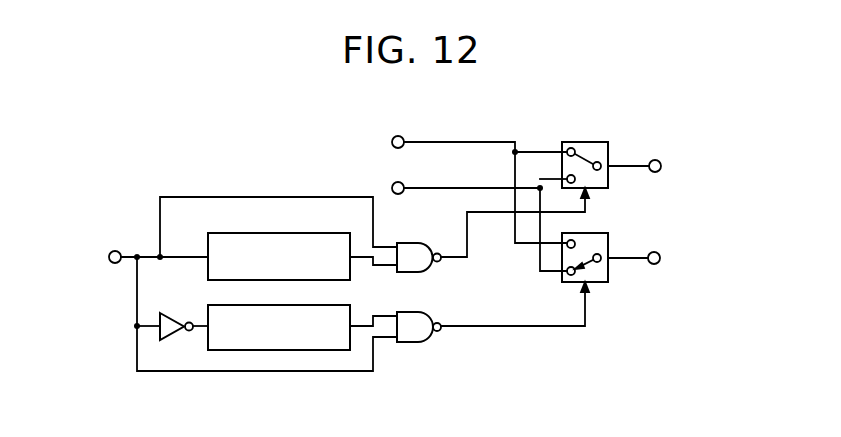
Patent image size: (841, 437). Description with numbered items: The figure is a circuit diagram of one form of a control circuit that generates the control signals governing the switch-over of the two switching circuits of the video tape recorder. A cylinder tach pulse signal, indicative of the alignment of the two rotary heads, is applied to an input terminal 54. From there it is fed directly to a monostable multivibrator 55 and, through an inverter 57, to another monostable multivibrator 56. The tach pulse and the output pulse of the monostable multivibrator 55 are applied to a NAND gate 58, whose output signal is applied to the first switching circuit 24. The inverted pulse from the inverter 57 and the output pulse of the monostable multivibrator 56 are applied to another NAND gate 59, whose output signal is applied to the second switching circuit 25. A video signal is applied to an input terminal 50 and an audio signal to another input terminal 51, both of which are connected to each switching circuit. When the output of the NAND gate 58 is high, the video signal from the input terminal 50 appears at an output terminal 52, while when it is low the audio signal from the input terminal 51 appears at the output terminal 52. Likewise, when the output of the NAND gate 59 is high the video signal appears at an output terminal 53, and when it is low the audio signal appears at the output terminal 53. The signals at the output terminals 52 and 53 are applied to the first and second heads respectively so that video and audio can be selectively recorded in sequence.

The first switching circuit 24 is at (590, 141).
The second switching circuit 25 is at (593, 233).
The input terminal 50 is at (393, 137).
The input terminal 51 is at (393, 183).
The output terminal 52 is at (662, 163).
The output terminal 53 is at (661, 255).
The input terminal 54 is at (109, 252).
The monostable multivibrator 55 is at (310, 233).
The monostable multivibrator 56 is at (335, 305).
The inverter 57 is at (168, 312).
The NAND gate 58 is at (420, 243).
The NAND gate 59 is at (415, 312).